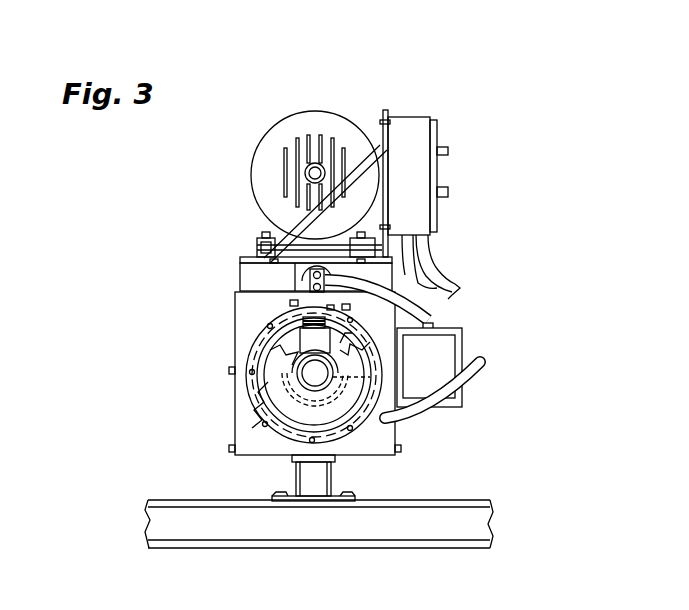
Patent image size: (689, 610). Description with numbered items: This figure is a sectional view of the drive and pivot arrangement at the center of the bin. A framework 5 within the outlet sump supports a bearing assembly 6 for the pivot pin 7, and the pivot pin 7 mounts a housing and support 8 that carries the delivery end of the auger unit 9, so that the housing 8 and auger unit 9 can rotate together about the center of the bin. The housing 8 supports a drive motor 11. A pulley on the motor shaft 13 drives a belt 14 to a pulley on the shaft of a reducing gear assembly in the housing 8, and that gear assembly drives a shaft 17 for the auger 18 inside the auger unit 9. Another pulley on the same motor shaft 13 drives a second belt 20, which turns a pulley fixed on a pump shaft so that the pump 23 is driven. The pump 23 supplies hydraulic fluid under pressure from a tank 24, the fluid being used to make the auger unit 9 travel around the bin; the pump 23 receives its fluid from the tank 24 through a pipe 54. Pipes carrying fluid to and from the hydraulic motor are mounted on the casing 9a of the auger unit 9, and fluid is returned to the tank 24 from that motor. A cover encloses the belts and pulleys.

The framework 5 is at (447, 538).
The bearing assembly 6 is at (287, 499).
The pivot pin 7 is at (303, 475).
The housing and support 8 is at (253, 206).
The auger unit 9 is at (243, 356).
The casing 9a is at (268, 418).
The drive motor 11 is at (297, 117).
The motor shaft 13 is at (305, 173).
The belt 14 is at (297, 279).
The shaft 17 is at (295, 378).
The auger 18 is at (315, 396).
The belt 20 is at (412, 288).
The pump 23 is at (462, 342).
The tank 24 is at (398, 426).
The pipe 54 is at (436, 318).